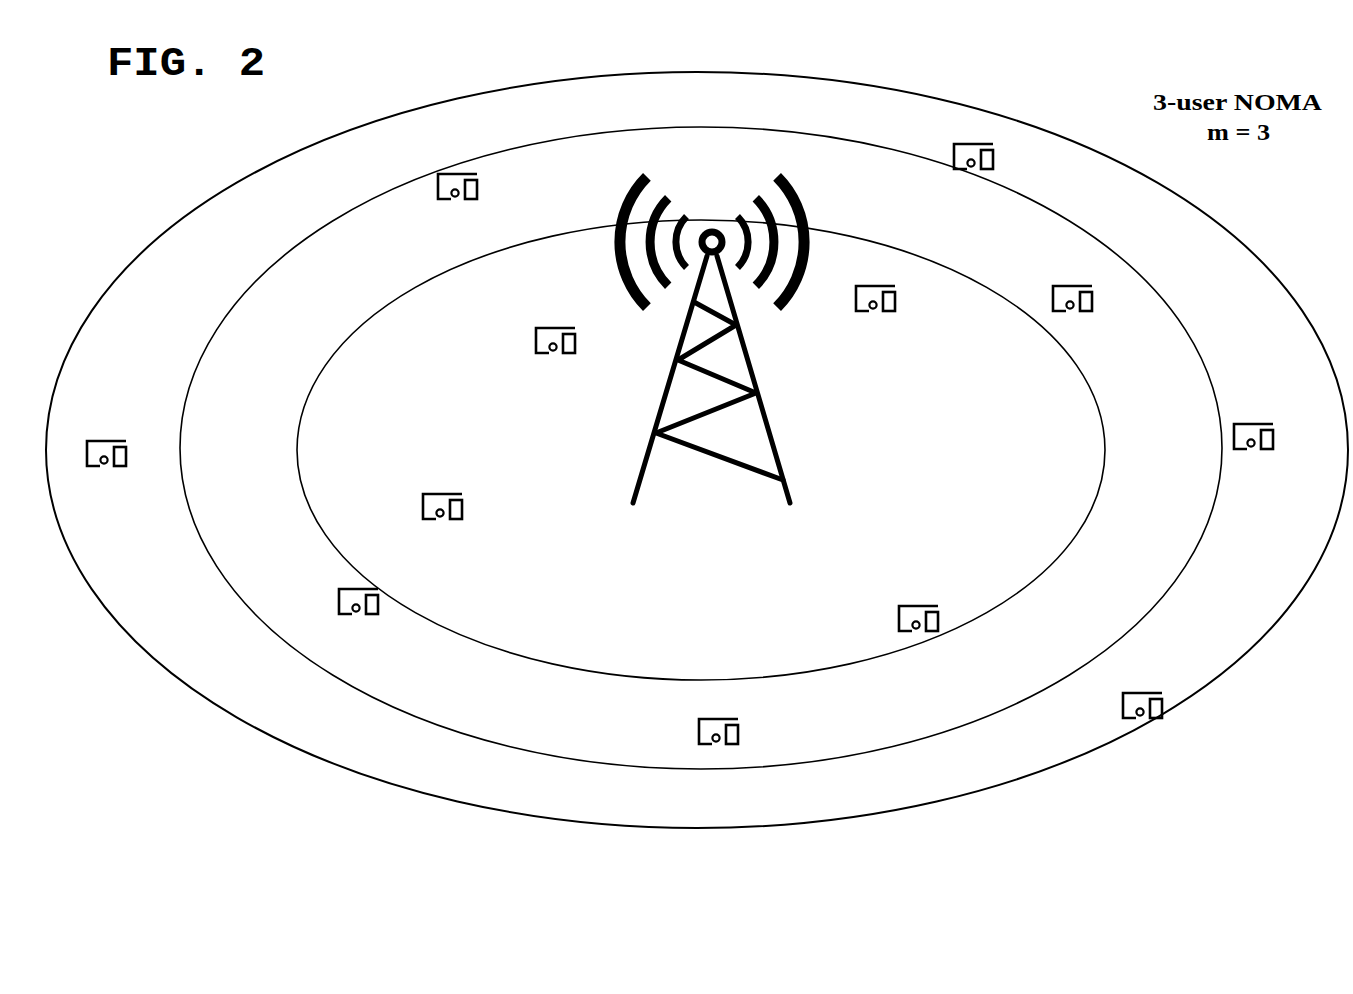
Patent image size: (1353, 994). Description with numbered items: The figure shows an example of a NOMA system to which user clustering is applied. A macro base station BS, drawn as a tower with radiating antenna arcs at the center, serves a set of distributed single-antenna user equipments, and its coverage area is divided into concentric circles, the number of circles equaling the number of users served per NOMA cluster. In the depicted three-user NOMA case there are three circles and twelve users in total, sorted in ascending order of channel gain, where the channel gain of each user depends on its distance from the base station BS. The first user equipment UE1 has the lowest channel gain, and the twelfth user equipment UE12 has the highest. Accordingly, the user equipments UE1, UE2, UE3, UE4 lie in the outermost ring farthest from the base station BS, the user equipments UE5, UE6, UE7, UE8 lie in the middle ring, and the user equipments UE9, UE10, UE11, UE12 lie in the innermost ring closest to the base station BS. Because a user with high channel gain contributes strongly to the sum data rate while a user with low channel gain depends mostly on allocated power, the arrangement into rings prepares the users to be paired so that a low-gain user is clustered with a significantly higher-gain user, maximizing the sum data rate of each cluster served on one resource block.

The first user equipment UE1 is at (1141, 691).
The user equipment UE2 is at (104, 437).
The user equipment UE3 is at (1251, 422).
The user equipment UE4 is at (972, 142).
The user equipment UE5 is at (457, 199).
The user equipment UE6 is at (717, 716).
The user equipment UE7 is at (1067, 283).
The user equipment UE8 is at (361, 617).
The user equipment UE9 is at (916, 604).
The user equipment UE10 is at (438, 492).
The user equipment UE11 is at (873, 283).
The twelfth user equipment UE12 is at (551, 325).
The macro base station BS is at (712, 361).